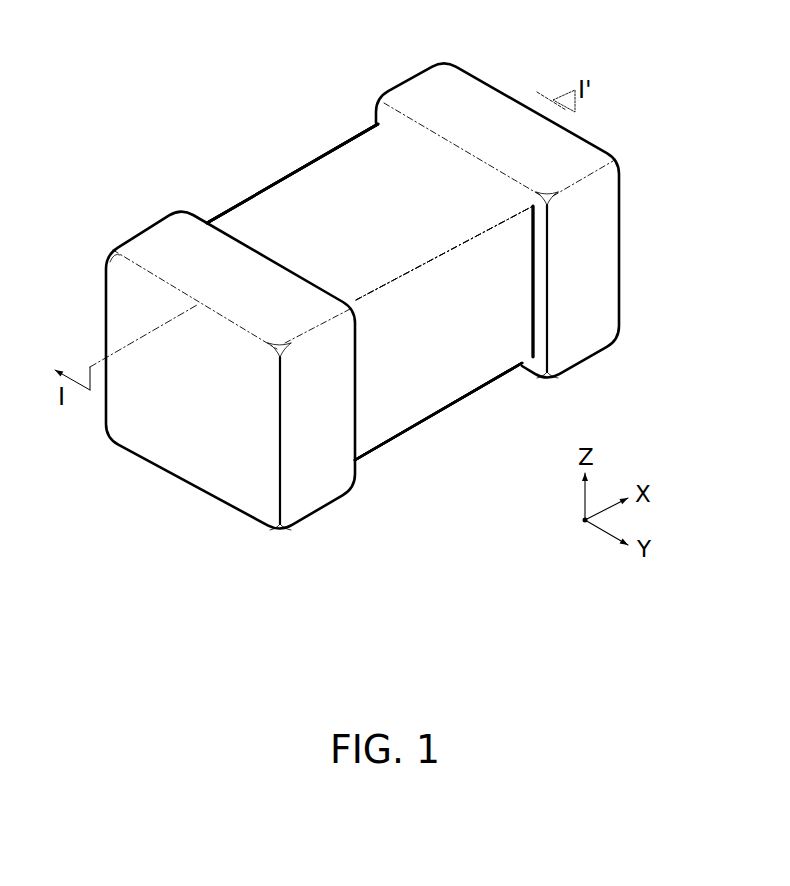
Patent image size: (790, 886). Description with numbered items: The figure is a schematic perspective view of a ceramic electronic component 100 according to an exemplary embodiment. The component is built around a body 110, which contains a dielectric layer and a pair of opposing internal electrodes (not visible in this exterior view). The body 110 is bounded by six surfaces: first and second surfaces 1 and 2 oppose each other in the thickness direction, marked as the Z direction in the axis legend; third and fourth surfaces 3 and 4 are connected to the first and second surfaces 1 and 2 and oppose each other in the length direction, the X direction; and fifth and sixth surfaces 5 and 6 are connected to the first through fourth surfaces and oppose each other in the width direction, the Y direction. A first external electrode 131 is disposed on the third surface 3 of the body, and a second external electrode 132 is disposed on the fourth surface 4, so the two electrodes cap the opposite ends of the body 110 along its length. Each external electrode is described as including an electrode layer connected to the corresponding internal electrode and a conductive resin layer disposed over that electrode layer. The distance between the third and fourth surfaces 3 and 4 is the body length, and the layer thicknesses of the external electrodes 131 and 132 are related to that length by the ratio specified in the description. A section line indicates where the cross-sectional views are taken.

The ceramic electronic component 100 is at (165, 72).
The body 110 is at (263, 213).
The first external electrode 131 is at (163, 243).
The second external electrode 132 is at (420, 100).
The first surface 1 is at (402, 383).
The second surface 2 is at (380, 180).
The third surface 3 is at (200, 428).
The fourth surface 4 is at (569, 235).
The fifth surface 5 is at (462, 356).
The sixth surface 6 is at (326, 199).